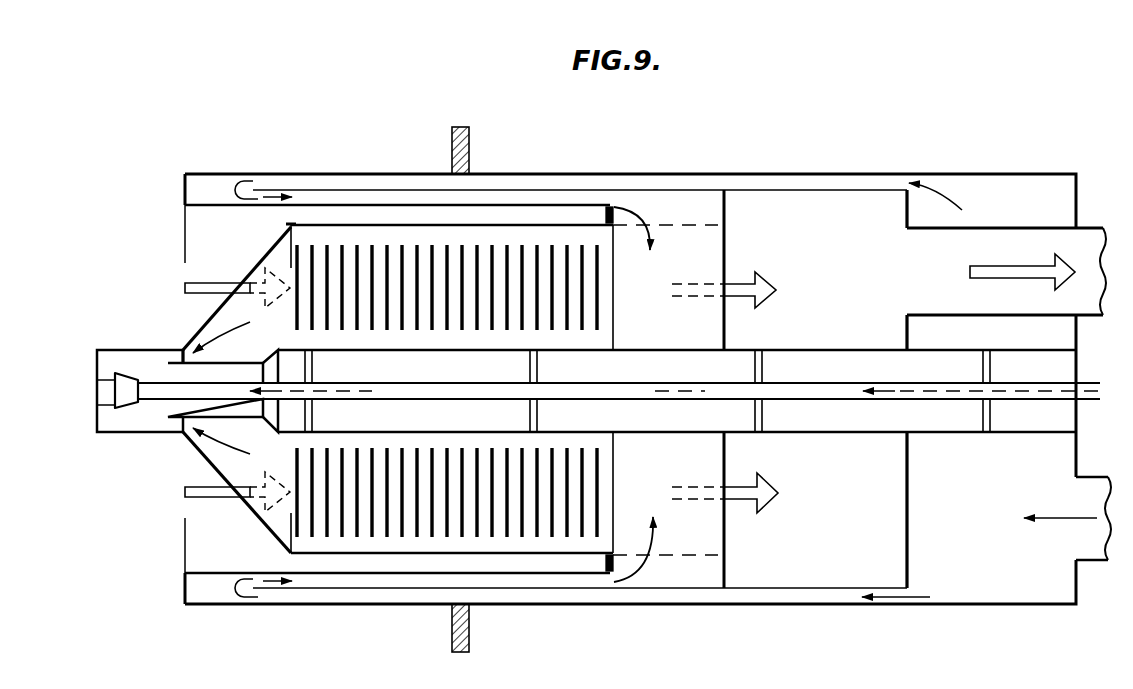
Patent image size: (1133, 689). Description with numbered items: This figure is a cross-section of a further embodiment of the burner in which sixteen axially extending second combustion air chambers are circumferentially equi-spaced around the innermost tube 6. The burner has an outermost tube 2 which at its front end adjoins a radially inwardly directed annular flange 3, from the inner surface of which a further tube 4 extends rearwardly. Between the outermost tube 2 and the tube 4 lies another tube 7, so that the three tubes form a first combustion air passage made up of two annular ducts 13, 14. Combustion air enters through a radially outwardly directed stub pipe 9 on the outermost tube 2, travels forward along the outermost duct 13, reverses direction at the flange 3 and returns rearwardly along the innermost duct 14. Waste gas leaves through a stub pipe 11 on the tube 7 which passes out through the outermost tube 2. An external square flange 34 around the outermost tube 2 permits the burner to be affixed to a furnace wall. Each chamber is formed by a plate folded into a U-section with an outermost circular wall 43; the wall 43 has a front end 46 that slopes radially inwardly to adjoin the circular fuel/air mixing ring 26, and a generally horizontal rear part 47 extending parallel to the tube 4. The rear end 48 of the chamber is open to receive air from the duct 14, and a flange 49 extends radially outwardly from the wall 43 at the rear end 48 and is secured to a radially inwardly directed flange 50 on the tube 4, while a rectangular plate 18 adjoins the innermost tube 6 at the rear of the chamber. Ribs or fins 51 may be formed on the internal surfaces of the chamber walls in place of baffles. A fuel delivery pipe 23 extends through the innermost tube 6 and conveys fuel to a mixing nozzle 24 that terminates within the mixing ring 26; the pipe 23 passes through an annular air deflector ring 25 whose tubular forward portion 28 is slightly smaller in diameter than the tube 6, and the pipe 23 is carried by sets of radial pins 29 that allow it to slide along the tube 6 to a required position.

The outermost tube 2 is at (541, 174).
The annular flange 3 is at (182, 183).
The tube 4 is at (365, 204).
The innermost tube 6 is at (847, 349).
The tube 7 is at (684, 186).
The stub pipe 9 is at (1086, 477).
The stub pipe 11 is at (1083, 229).
The annular duct 13 is at (301, 186).
The annular duct 14 is at (489, 195).
The rectangular plate 18 is at (728, 330).
The fuel delivery pipe 23 is at (634, 390).
The mixing nozzle 24 is at (118, 408).
The air deflector ring 25 is at (179, 350).
The fuel/air mixing ring 26 is at (116, 350).
The forward portion 28 is at (204, 446).
The radial pins 29 is at (313, 366).
The external square flange 34 is at (466, 128).
The outermost circular wall 43 is at (292, 219).
The front end 46 is at (257, 273).
The rear part 47 is at (399, 226).
The rear end 48 is at (614, 284).
The flange 49 is at (655, 250).
The flange 50 is at (613, 205).
The ribs or fins 51 is at (600, 320).